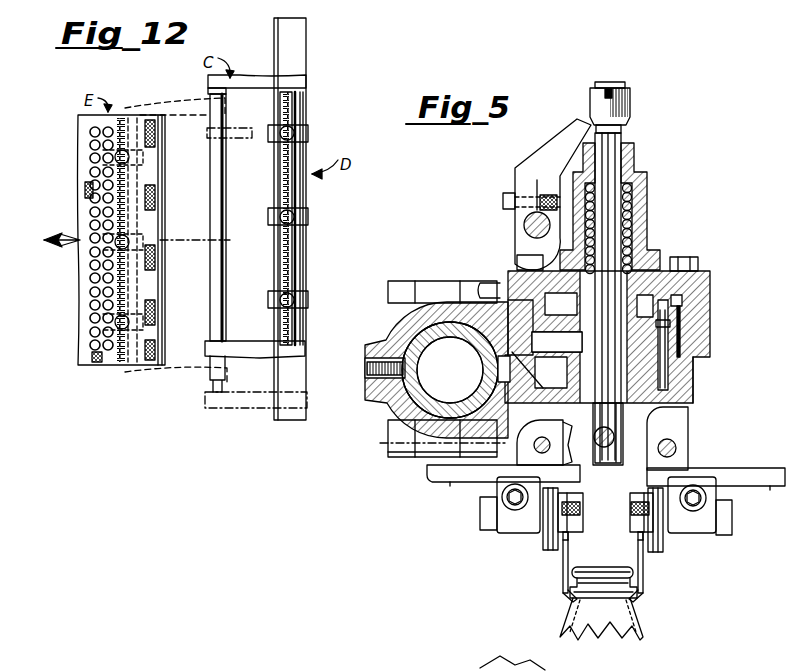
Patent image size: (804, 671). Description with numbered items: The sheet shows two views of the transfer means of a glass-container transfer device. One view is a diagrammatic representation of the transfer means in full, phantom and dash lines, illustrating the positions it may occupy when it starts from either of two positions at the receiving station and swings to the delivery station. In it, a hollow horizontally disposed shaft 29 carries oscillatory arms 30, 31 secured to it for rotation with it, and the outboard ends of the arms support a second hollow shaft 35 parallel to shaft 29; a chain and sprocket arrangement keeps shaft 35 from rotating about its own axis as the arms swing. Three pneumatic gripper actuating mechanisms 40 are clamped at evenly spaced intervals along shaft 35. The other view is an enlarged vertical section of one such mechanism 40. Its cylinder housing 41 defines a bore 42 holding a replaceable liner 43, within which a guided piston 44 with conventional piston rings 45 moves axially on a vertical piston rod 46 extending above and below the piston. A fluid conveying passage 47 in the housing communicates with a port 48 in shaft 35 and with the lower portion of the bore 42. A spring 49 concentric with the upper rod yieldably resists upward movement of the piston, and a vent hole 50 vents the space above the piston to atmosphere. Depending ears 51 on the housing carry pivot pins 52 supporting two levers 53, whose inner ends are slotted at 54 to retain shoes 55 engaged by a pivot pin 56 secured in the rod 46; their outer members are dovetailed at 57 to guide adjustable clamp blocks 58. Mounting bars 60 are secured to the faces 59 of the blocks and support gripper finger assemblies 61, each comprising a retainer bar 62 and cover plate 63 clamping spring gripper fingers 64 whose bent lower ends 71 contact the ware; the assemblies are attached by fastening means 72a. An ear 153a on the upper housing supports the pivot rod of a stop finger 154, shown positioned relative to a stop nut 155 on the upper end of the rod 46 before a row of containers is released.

In FIG. 12, the horizontally disposed shaft 29 is at (226, 259).
In FIG. 12, the oscillatory arm 30 is at (244, 78).
In FIG. 12, the oscillatory arm 31 is at (254, 348).
In FIG. 12, the second hollow shaft 35 is at (306, 240).
In FIG. 5, the second hollow shaft 35 is at (395, 388).
In FIG. 12, the pneumatic gripper actuating mechanism 40 is at (296, 135).
In FIG. 5, the pneumatic gripper actuating mechanism 40 is at (710, 290).
In FIG. 5, the cylinder housing 41 is at (694, 368).
In FIG. 5, the bore 42 is at (683, 350).
In FIG. 5, the replaceable liner 43 is at (670, 332).
In FIG. 5, the guided piston 44 is at (576, 343).
In FIG. 5, the piston rings 45 is at (670, 316).
In FIG. 5, the vertical piston rod 46 is at (610, 222).
In FIG. 5, the fluid conveying passage 47 is at (567, 355).
In FIG. 5, the port 48 is at (497, 370).
In FIG. 5, the spring 49 is at (632, 200).
In FIG. 5, the vent hole 50 is at (552, 195).
In FIG. 5, the depending ears 51 is at (525, 420).
In FIG. 5, the pivot pins 52 is at (533, 445).
In FIG. 5, the levers 53 is at (450, 467).
In FIG. 5, the slot 54 is at (588, 418).
In FIG. 5, the shoe 55 is at (634, 458).
In FIG. 5, the pivot pin 56 is at (604, 447).
In FIG. 5, the dovetail 57 is at (462, 480).
In FIG. 5, the clamp block 58 is at (512, 533).
In FIG. 5, the face 59 is at (530, 540).
In FIG. 5, the mounting bar 60 is at (550, 550).
In FIG. 5, the gripper finger assembly 61 is at (624, 531).
In FIG. 5, the retainer bar 62 is at (578, 545).
In FIG. 5, the cover plate 63 is at (563, 580).
In FIG. 5, the spring gripper fingers 64 is at (566, 600).
In FIG. 5, the lower end of gripper finger 71 is at (566, 605).
In FIG. 5, the fastening means 72a is at (630, 510).
In FIG. 5, the ear 153a is at (512, 234).
In FIG. 5, the stop finger 154 is at (572, 128).
In FIG. 5, the stop nut 155 is at (630, 96).